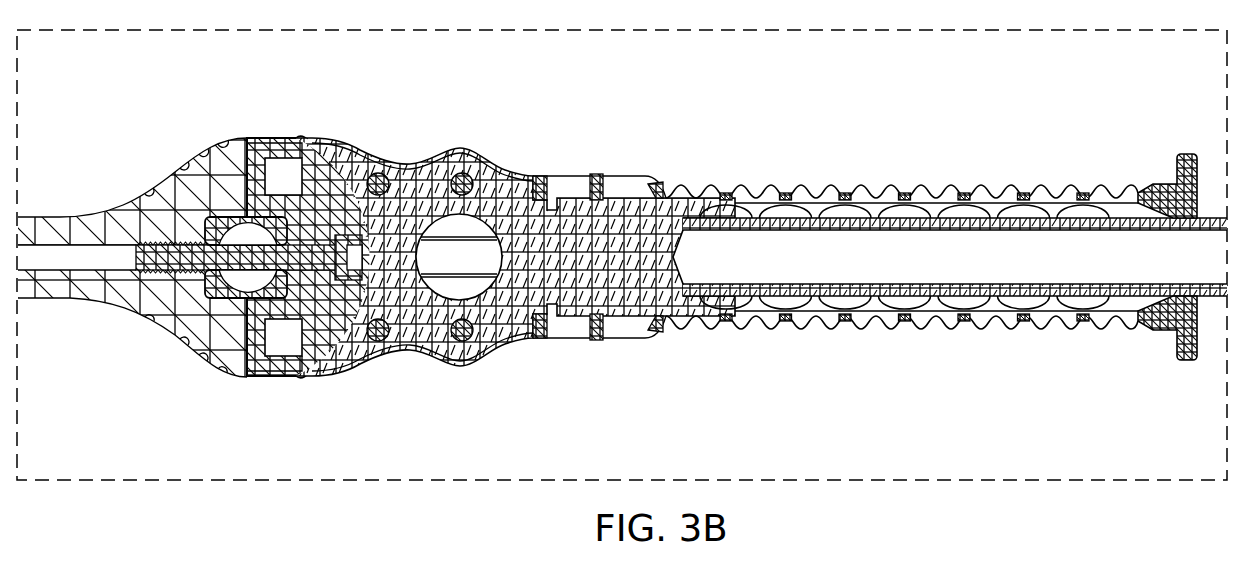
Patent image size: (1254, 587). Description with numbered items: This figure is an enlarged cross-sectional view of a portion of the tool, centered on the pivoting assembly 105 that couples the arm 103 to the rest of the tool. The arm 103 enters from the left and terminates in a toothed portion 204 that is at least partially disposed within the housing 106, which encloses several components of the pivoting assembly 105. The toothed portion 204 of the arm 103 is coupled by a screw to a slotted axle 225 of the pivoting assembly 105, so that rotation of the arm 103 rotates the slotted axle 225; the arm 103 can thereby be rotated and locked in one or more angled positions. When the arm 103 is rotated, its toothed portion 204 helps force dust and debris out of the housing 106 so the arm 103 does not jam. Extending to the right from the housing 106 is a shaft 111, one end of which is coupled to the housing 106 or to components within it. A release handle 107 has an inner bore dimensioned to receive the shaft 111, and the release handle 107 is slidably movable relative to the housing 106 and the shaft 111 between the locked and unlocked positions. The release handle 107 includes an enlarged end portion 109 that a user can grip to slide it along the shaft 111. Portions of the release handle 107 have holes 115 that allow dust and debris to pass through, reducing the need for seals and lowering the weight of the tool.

The arm 103 is at (73, 216).
The pivoting assembly 105 is at (622, 244).
The housing 106 is at (363, 149).
The release handle 107 is at (967, 186).
The enlarged end portion 109 is at (1158, 183).
The shaft 111 is at (788, 298).
The holes 115 is at (1074, 208).
The toothed portion 204 is at (296, 376).
The slotted axle 225 is at (268, 215).